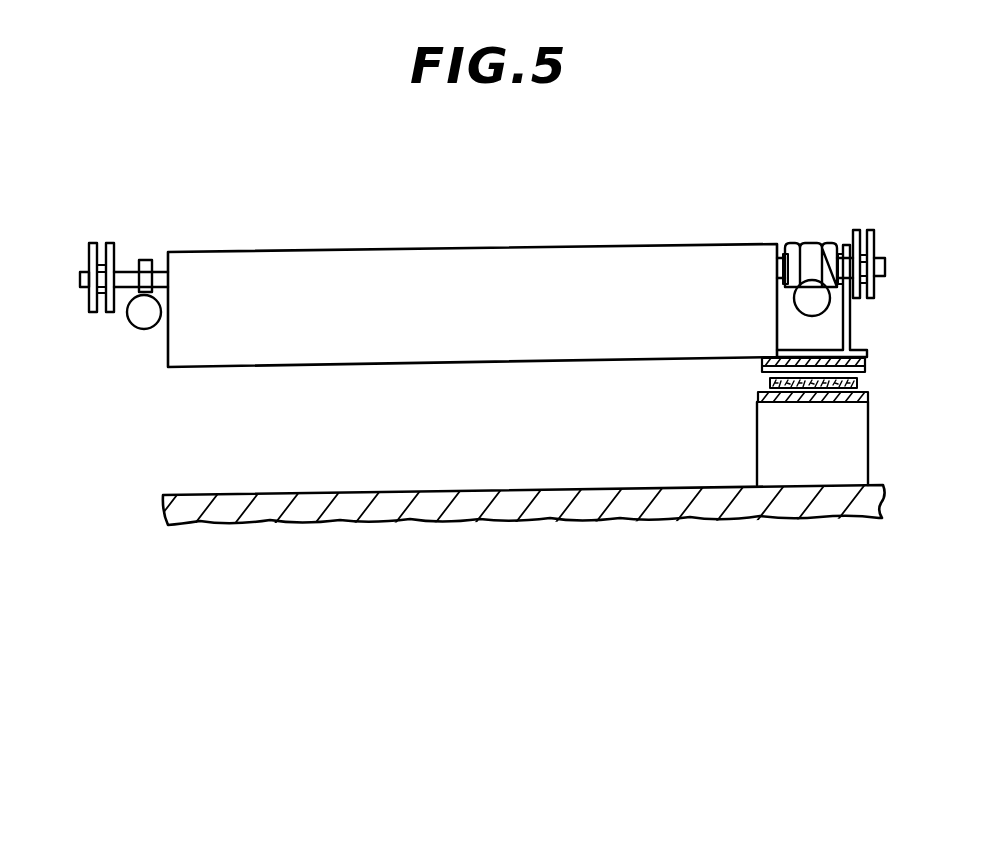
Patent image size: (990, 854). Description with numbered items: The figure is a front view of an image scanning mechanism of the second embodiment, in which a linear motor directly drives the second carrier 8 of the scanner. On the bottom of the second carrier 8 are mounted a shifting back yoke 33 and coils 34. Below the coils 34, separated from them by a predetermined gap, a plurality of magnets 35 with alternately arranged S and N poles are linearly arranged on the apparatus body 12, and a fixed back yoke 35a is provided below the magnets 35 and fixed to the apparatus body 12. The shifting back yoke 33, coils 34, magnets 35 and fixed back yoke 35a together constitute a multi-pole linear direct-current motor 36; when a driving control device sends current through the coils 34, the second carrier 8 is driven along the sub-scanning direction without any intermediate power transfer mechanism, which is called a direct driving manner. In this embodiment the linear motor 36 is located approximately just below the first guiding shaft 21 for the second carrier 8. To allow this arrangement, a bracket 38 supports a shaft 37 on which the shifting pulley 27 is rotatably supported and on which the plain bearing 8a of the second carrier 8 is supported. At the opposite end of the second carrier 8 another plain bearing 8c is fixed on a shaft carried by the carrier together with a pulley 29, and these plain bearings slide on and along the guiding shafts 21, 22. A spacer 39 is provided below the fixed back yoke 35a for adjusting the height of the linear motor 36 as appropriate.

The second carrier 8 is at (441, 250).
The plain bearing 8a is at (810, 258).
The plain bearing 8c is at (146, 261).
The apparatus body 12 is at (423, 492).
The first guiding shaft 21 is at (806, 312).
The guiding shaft 22 is at (142, 317).
The shifting pulley 27 is at (862, 236).
The pulley 29 is at (102, 256).
The shifting back yoke 33 is at (868, 360).
The coils 34 is at (867, 370).
The magnets 35 is at (860, 391).
The fixed back yoke 35a is at (870, 401).
The multi-pole linear direct-current motor 36 is at (748, 391).
The shaft 37 is at (886, 267).
The bracket 38 is at (852, 311).
The spacer 39 is at (862, 458).